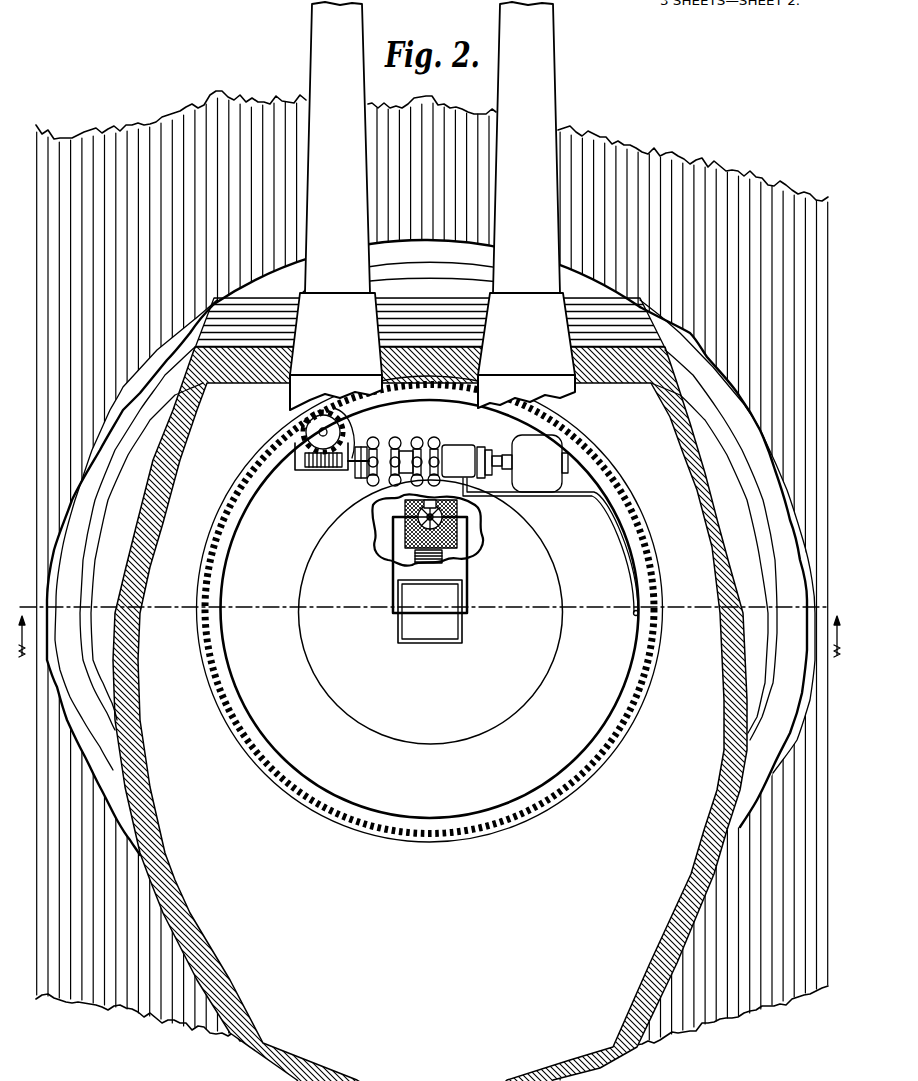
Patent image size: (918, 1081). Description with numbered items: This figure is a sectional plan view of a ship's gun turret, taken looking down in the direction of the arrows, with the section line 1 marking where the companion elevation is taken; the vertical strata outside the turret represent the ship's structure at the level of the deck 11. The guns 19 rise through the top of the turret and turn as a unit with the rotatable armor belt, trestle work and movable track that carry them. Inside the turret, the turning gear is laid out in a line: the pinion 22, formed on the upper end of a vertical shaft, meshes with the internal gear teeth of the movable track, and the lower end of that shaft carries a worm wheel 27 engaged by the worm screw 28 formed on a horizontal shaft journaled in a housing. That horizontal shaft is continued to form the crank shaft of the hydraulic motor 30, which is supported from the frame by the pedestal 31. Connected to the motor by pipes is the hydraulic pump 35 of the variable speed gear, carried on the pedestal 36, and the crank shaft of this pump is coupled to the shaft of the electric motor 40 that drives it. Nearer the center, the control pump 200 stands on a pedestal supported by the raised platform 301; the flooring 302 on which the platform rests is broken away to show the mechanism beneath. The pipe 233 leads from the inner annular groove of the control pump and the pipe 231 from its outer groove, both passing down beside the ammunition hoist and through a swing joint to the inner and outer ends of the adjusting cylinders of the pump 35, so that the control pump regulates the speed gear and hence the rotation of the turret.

The section line 1— 1 is at (429, 625).
The deck 11 is at (117, 153).
The guns 19 is at (328, 87).
The pinion 22 is at (297, 473).
The worm wheel 27 is at (356, 428).
The worm screw 28 is at (323, 468).
The hydraulic motor 30 is at (395, 437).
The pedestal 31 is at (360, 473).
The hydraulic pump 35 is at (420, 444).
The pedestal 36 is at (487, 450).
The electric motor 40 is at (545, 452).
The control pump 200 is at (413, 515).
The pipe 231 is at (393, 567).
The pipe 233 is at (467, 573).
The raised platform 301 is at (455, 535).
The flooring 302 is at (472, 547).